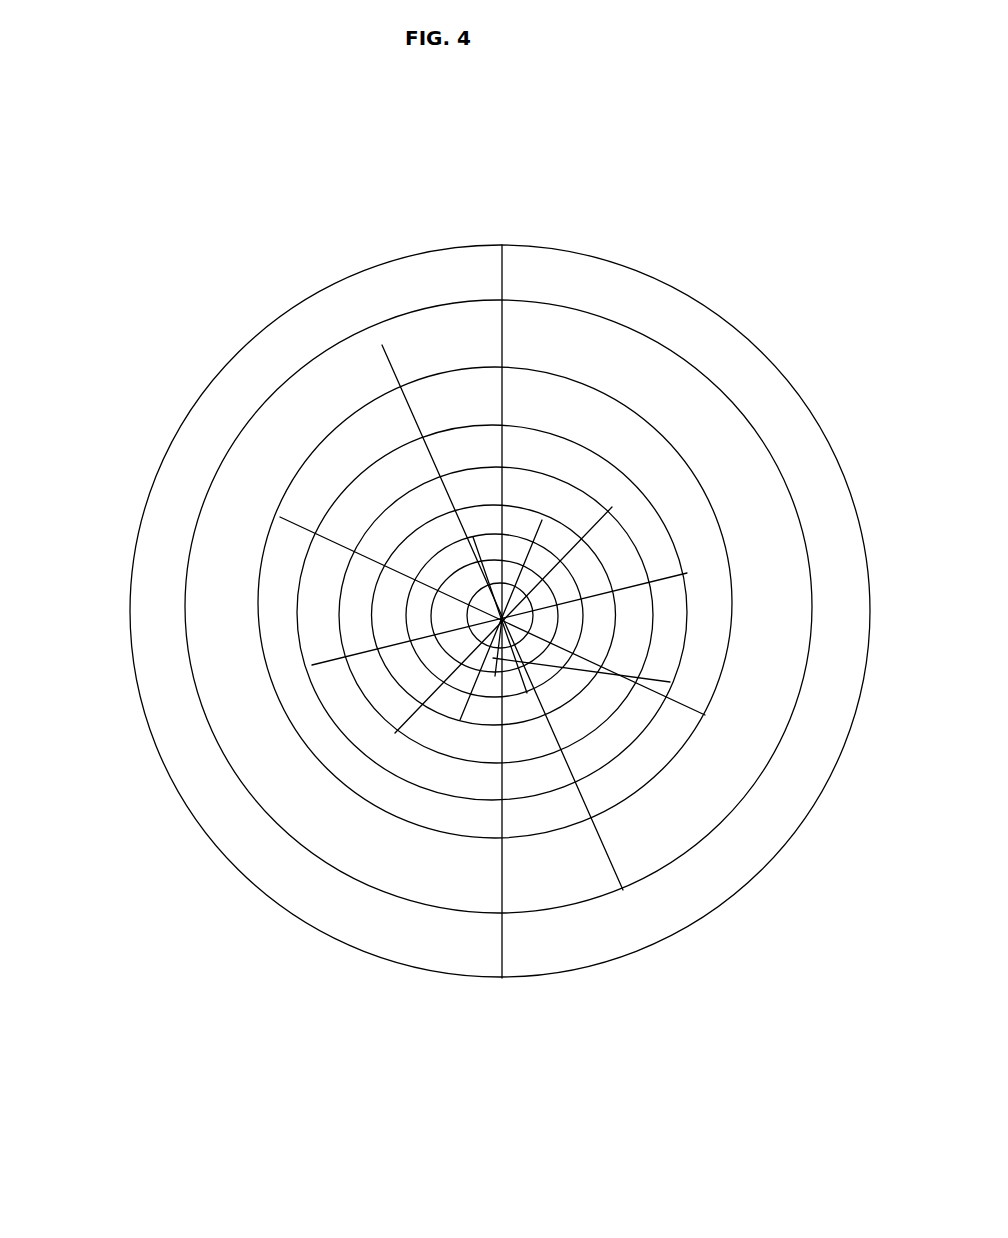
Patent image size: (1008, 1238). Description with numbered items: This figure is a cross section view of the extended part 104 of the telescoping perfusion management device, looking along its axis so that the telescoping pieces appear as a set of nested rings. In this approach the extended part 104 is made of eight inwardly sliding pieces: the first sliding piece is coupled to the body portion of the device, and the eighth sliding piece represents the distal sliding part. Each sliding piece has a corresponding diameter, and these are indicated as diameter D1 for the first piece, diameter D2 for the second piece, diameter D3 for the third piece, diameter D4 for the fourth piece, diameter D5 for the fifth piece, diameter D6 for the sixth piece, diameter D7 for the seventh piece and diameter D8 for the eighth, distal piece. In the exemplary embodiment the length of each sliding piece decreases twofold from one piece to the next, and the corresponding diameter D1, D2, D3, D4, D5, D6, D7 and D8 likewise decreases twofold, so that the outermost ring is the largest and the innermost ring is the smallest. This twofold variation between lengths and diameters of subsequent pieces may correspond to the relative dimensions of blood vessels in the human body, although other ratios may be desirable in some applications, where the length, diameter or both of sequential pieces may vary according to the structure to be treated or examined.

The extended part 104 is at (648, 272).
The diameter of sliding piece 1 D1 is at (502, 250).
The diameter of sliding piece 2 D2 is at (382, 345).
The diameter of sliding piece 3 D3 is at (303, 528).
The diameter of sliding piece 4 D4 is at (335, 661).
The diameter of sliding piece 5 D5 is at (420, 704).
The diameter of sliding piece 6 D6 is at (499, 622).
The diameter of sliding piece 7 D7 is at (473, 537).
The diameter of sliding piece 8 D8 is at (670, 682).